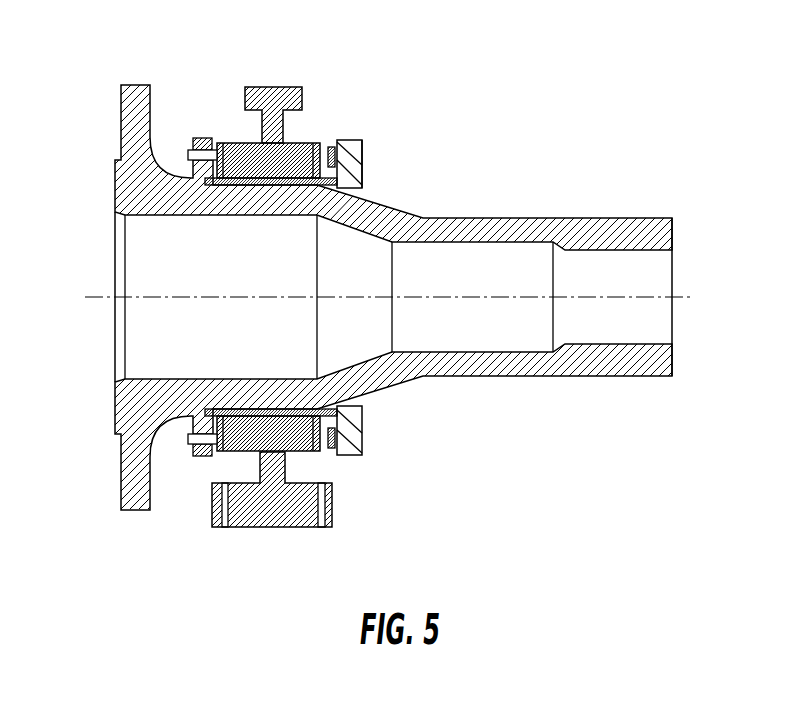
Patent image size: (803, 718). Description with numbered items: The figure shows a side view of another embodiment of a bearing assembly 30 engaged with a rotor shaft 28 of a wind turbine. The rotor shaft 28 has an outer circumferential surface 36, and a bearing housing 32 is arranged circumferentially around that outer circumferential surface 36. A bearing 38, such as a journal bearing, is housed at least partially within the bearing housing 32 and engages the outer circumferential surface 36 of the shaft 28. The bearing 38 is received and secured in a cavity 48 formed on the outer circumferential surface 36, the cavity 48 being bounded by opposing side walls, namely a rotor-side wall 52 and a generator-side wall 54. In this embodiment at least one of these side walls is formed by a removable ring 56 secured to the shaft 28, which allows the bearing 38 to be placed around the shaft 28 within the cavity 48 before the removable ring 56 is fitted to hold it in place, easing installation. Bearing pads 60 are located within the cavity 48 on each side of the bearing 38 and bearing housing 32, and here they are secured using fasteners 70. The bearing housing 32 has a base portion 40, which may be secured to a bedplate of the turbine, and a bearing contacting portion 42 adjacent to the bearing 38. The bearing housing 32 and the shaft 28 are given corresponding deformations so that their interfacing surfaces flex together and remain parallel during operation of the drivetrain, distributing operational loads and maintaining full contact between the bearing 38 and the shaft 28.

The bearing assembly 30 is at (80, 68).
The rotor shaft 28 is at (458, 212).
The outer circumferential surface 36 is at (543, 218).
The cavity 48 is at (207, 186).
The bearing pad 60 is at (217, 143).
The bearing contacting portion 42 is at (297, 157).
The bearing housing 32 is at (242, 80).
The base portion 40 is at (270, 527).
The bearing 38 is at (330, 166).
The generator-side wall 54 is at (345, 140).
The removable ring 56 is at (370, 157).
The rotor-side wall 52 is at (203, 138).
The fastener 70 is at (188, 156).